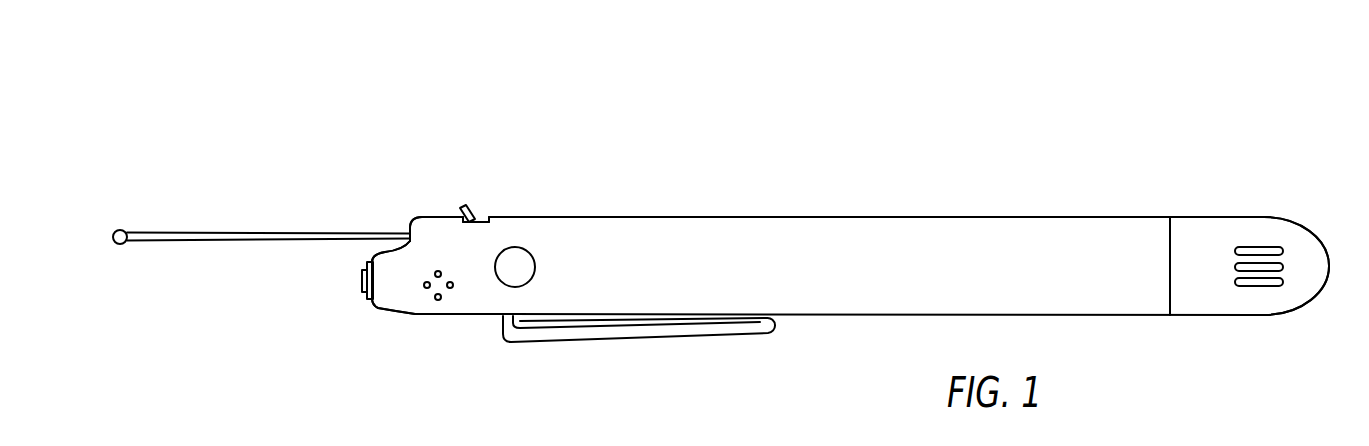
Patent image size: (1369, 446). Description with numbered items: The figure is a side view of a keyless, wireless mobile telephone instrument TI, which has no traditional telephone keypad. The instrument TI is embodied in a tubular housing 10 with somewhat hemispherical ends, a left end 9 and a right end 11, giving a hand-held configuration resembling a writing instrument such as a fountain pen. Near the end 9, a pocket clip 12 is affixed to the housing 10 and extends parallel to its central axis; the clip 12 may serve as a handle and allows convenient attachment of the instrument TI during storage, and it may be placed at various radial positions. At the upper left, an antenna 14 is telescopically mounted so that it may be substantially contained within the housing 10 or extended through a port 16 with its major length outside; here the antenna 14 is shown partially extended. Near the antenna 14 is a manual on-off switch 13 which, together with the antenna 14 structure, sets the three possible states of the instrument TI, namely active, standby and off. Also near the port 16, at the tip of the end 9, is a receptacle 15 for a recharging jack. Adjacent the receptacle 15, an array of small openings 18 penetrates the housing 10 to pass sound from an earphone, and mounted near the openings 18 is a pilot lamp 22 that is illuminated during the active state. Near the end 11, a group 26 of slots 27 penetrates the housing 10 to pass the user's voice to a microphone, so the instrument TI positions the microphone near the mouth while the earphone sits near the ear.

The end 9 is at (380, 305).
The tubular housing 10 is at (950, 210).
The end 11 is at (1320, 240).
The pocket clip 12 is at (600, 329).
The manual on-off switch 13 is at (467, 207).
The antenna 14 is at (207, 238).
The receptacle 15 is at (362, 279).
The port 16 is at (408, 231).
The array of small openings 18 is at (430, 293).
The pilot lamp 22 is at (514, 247).
The group of slots 26 is at (1215, 266).
The slots 27 is at (1283, 267).
The wireless mobile telephone instrument TI is at (794, 198).